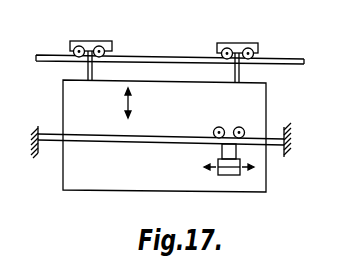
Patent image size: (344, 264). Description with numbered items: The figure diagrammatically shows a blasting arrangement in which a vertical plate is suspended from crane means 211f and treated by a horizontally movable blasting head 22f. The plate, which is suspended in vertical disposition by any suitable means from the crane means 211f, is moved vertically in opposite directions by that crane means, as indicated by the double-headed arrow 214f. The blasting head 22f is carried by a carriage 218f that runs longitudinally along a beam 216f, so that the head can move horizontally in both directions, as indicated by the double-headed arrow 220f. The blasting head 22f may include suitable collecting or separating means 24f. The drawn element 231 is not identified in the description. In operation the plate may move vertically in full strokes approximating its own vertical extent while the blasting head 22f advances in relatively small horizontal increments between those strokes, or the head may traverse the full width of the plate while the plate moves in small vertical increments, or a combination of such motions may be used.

The crane means 211f is at (89, 41).
The double-headed arrow 214f is at (131, 100).
The housing 231 is at (267, 102).
The beam 216f is at (145, 145).
The carriage 218f is at (240, 127).
The double-headed arrow 220f is at (216, 176).
The blasting head 22f is at (240, 150).
The collecting or separating means 24f is at (232, 175).